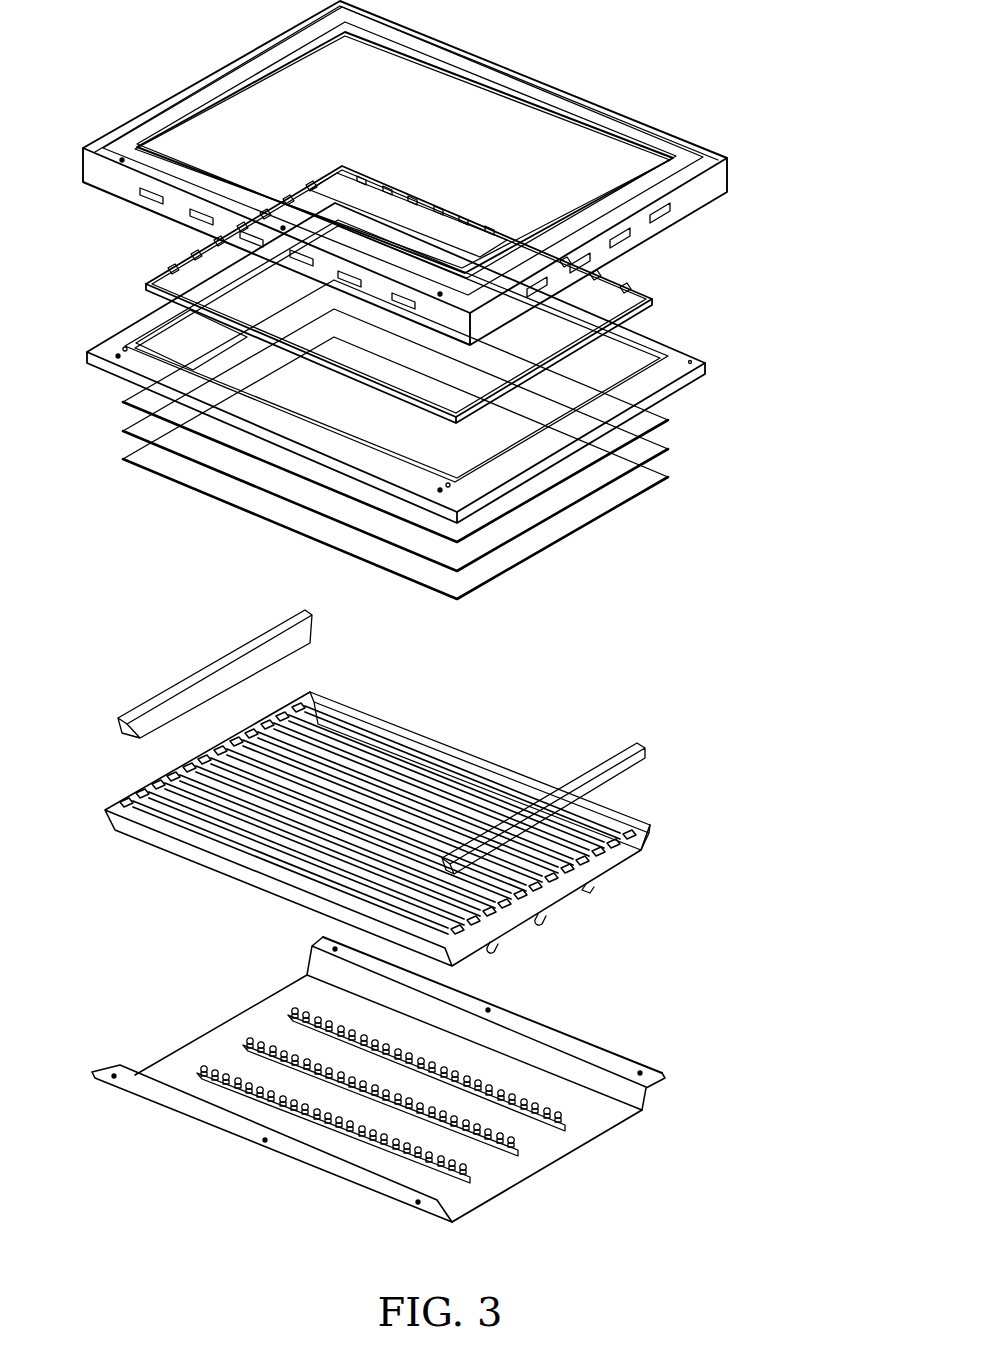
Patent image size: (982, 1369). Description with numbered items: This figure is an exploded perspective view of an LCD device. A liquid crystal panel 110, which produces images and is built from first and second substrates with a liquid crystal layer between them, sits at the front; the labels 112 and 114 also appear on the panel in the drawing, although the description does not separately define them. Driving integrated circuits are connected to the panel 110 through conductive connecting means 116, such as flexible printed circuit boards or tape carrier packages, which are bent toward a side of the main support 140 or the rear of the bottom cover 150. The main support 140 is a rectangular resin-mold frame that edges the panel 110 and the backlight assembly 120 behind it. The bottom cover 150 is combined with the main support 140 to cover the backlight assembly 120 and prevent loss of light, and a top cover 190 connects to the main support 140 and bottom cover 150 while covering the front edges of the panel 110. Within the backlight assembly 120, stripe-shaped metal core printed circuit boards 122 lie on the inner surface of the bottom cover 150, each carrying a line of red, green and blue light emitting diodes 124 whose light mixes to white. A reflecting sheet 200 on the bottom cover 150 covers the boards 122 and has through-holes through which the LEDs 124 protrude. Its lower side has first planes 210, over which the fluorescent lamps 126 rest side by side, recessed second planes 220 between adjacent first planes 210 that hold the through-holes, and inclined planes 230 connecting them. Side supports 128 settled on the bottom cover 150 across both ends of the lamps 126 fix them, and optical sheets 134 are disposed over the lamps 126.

The liquid crystal panel 110 is at (668, 298).
The display panel 112 is at (152, 291).
The driving circuit board / polarizer 114 is at (160, 278).
The conductive connecting means 116 is at (418, 192).
The backlight assembly 120 is at (765, 451).
The metal core printed circuit boards 122 is at (470, 1180).
The light emitting diodes 124 is at (512, 1143).
The fluorescent lamps 126 is at (387, 726).
The side supports 128 is at (640, 754).
The optical sheets 134 is at (697, 407).
The main support 140 is at (705, 358).
The bottom cover 150 is at (657, 1097).
The top cover 190 is at (728, 176).
The reflecting sheet 200 is at (436, 823).
The first planes 210 is at (627, 856).
The second planes 220 is at (597, 893).
The inclined planes 230 is at (556, 926).